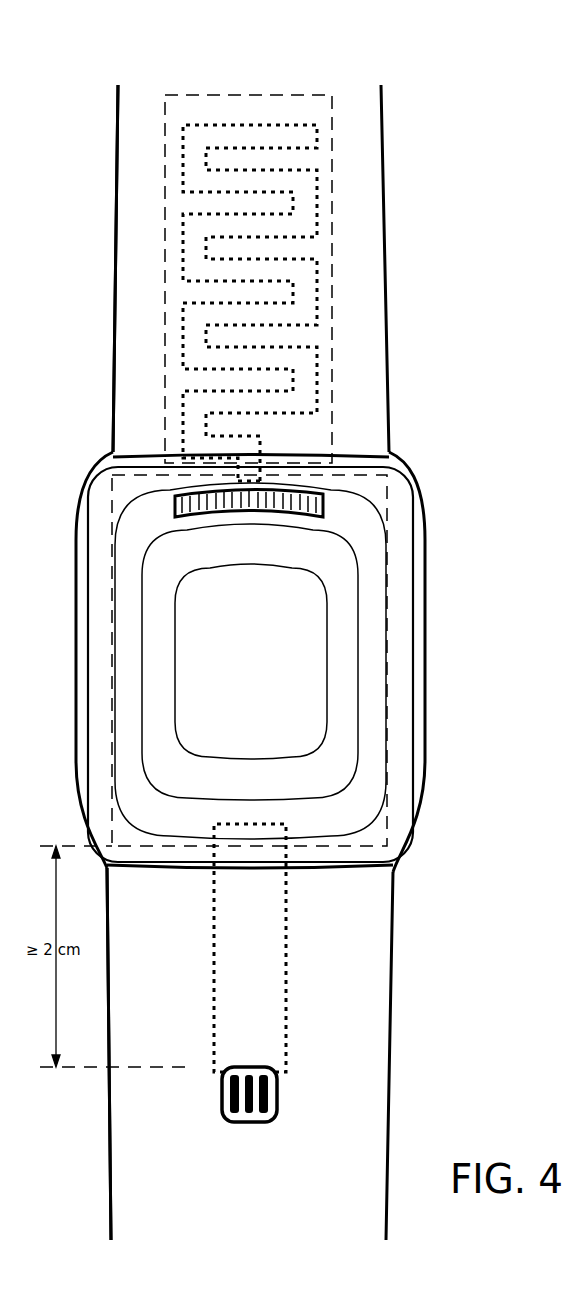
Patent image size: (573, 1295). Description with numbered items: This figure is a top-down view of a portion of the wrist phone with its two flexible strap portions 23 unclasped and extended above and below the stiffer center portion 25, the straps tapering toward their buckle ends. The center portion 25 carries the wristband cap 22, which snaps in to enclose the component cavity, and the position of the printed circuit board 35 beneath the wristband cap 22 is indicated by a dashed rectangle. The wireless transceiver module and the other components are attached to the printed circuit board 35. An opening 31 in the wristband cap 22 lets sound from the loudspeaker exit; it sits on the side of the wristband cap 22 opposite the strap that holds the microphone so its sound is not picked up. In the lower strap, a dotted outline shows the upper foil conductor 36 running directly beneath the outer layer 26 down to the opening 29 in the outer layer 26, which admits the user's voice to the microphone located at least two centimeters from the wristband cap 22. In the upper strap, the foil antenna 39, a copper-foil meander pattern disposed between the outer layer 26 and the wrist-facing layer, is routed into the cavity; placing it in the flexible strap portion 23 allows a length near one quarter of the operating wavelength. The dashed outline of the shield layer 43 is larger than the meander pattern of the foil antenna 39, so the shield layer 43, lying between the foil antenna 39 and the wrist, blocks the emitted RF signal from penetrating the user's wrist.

The wristband cap 22 is at (315, 869).
The flexible strap portion 23 is at (386, 232).
The center portion 25 is at (427, 596).
The outer layer 26 is at (150, 375).
The opening 29 is at (278, 1105).
The opening 31 is at (326, 509).
The printed circuit board 35 is at (142, 847).
The upper foil conductor 36 is at (287, 980).
The foil antenna 39 is at (318, 366).
The shield layer 43 is at (333, 303).